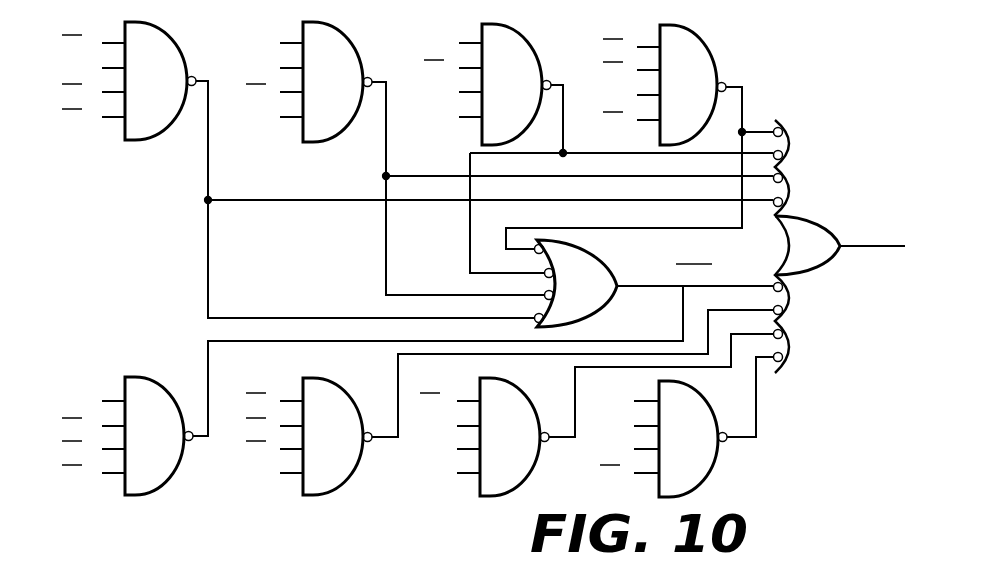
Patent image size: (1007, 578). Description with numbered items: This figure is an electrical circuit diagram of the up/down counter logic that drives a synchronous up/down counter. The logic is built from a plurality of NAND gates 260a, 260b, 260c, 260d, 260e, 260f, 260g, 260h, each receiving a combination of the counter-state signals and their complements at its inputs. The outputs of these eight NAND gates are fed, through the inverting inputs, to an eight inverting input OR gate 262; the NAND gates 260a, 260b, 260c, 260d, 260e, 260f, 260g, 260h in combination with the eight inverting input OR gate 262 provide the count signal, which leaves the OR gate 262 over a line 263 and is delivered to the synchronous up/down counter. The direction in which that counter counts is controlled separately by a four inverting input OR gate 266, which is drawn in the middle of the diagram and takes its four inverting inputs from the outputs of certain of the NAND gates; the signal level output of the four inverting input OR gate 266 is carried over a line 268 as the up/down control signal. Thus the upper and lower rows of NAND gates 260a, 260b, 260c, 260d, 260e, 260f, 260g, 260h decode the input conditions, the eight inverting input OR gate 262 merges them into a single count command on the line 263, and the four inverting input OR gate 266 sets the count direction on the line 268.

The NAND gate 260a is at (143, 130).
The NAND gate 260b is at (322, 130).
The NAND gate 260c is at (482, 130).
The NAND gate 260d is at (707, 70).
The NAND gate 260e is at (153, 470).
The NAND gate 260f is at (331, 470).
The NAND gate 260g is at (506, 470).
The NAND gate 260h is at (686, 470).
The eight inverting input OR gate 262 is at (826, 257).
The line 263 is at (887, 250).
The four inverting input OR gate 266 is at (594, 295).
The line 268 is at (621, 290).